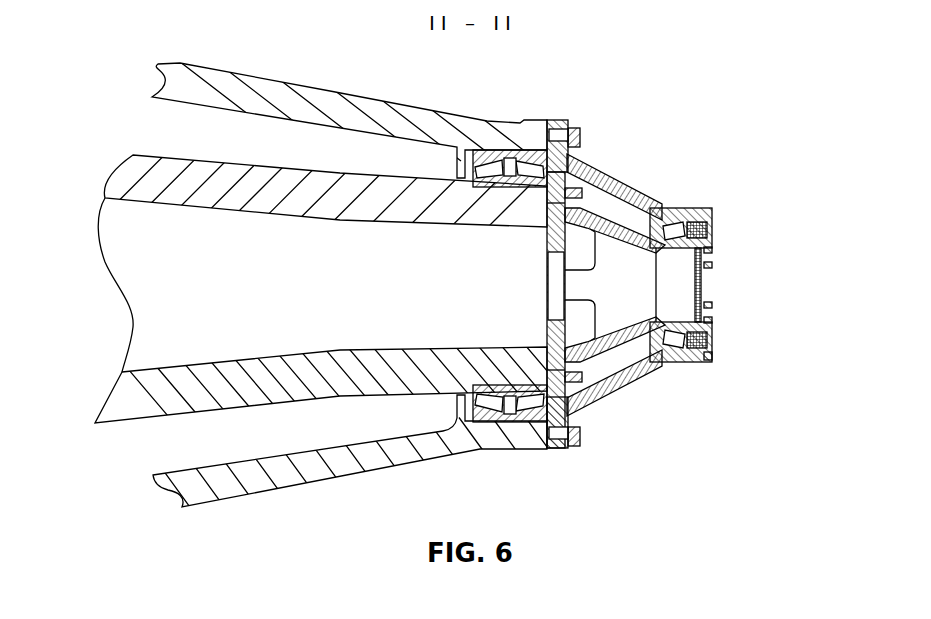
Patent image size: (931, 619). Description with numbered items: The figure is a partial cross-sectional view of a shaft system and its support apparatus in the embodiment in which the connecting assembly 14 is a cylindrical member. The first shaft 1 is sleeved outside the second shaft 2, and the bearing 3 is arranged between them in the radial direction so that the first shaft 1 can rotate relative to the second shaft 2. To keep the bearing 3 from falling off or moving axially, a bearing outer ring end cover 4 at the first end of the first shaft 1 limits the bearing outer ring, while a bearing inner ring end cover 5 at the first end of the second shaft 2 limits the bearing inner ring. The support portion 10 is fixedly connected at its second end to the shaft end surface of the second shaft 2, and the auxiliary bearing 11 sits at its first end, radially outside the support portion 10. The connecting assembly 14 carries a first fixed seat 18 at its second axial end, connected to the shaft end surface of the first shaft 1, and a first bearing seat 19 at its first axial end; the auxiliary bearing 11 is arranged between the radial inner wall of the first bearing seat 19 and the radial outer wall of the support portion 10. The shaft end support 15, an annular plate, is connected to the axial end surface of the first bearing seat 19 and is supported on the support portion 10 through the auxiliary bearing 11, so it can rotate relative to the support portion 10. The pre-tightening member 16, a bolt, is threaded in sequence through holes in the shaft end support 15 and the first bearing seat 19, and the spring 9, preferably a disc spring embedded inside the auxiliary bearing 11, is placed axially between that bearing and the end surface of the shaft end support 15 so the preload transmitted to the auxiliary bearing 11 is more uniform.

The first shaft 1 is at (255, 103).
The second shaft 2 is at (319, 190).
The bearing 3 is at (511, 160).
The bearing outer ring end cover 4 is at (557, 150).
The bearing inner ring end cover 5 is at (580, 444).
The spring 9 is at (708, 360).
The support portion 10 is at (620, 358).
The auxiliary bearing 11 is at (707, 333).
The connecting assembly 14 is at (647, 192).
The shaft end support 15 is at (705, 218).
The pre-tightening member 16 is at (712, 270).
The first fixed seat 18 is at (583, 137).
The first bearing seat 19 is at (688, 212).